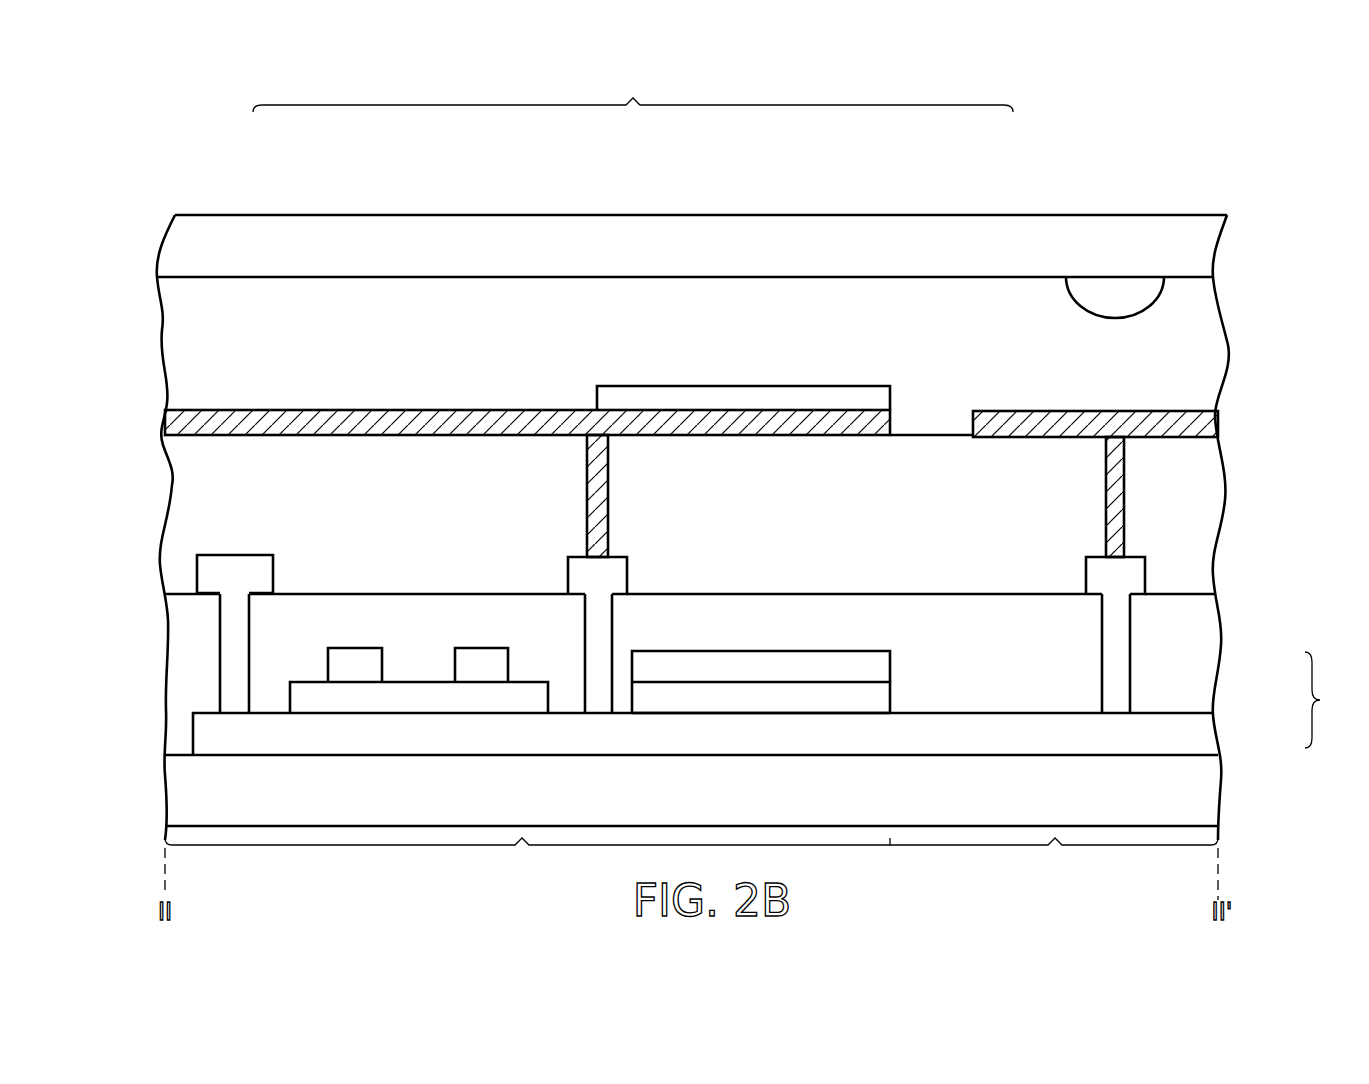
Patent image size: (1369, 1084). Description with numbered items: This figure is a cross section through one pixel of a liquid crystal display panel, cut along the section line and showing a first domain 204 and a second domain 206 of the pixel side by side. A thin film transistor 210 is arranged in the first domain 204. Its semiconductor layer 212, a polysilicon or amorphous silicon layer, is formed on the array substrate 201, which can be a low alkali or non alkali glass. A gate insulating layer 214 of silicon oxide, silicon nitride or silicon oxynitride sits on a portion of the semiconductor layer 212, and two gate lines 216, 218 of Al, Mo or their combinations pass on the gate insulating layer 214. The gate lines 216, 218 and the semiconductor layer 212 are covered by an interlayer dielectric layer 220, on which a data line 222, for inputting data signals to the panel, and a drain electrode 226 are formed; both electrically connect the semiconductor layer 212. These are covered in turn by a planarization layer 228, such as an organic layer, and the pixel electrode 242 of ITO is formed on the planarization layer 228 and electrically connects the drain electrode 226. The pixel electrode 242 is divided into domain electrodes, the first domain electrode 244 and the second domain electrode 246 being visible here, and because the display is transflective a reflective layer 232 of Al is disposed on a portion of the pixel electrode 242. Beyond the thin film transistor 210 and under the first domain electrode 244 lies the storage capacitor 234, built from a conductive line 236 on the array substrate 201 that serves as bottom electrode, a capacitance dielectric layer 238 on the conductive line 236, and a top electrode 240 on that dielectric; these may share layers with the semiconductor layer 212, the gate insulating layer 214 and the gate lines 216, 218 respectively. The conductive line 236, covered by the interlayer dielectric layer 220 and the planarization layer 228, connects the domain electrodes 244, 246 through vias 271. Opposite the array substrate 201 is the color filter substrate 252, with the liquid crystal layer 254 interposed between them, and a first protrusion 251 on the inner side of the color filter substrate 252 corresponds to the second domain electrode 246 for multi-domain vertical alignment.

The array substrate 201 is at (210, 787).
The first domain 204 is at (527, 857).
The second domain 206 is at (1054, 857).
The thin film transistor 210 is at (371, 873).
The semiconductor layer 212 is at (338, 735).
The gate insulating layer 214 is at (337, 700).
The gate line 216 is at (338, 665).
The gate line 218 is at (480, 662).
The interlayer dielectric layer 220 is at (1033, 628).
The data line 222 is at (210, 572).
The drain electrode 226 is at (608, 568).
The planarization layer 228 is at (1058, 463).
The reflective layer 232 is at (777, 397).
The storage capacitor 234 is at (1335, 700).
The conductive line 236 is at (1163, 738).
The capacitance dielectric layer 238 is at (880, 698).
The top electrode 240 is at (880, 668).
The pixel electrode 242 is at (633, 93).
The first domain electrode 244 is at (278, 425).
The second domain electrode 246 is at (990, 428).
The first protrusion 251 is at (1132, 298).
The color filter substrate 252 is at (1195, 249).
The liquid crystal layer 254 is at (187, 347).
The via 271 is at (1117, 575).